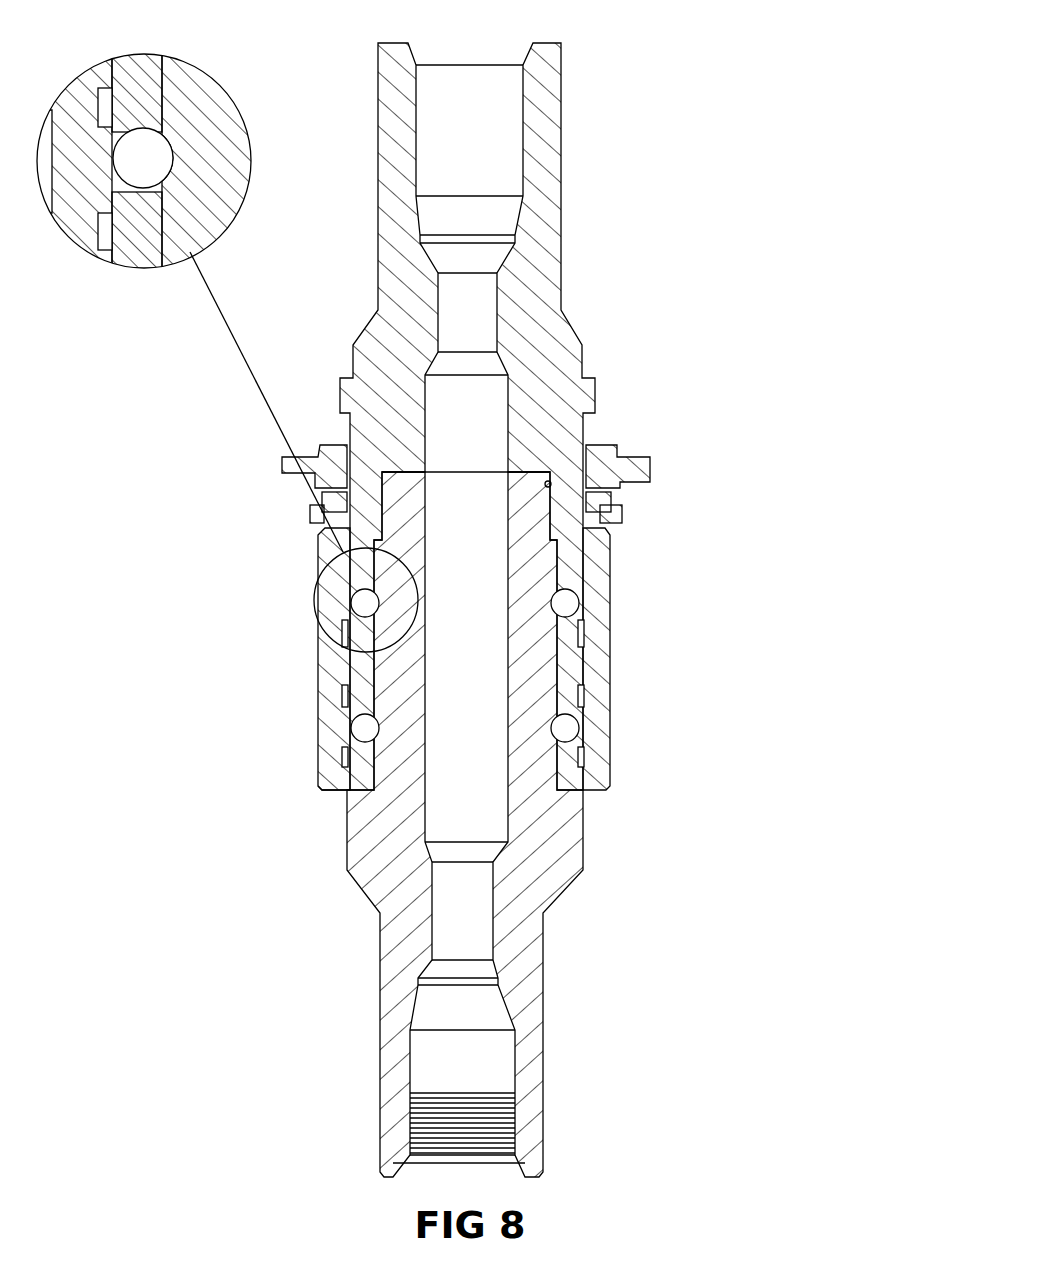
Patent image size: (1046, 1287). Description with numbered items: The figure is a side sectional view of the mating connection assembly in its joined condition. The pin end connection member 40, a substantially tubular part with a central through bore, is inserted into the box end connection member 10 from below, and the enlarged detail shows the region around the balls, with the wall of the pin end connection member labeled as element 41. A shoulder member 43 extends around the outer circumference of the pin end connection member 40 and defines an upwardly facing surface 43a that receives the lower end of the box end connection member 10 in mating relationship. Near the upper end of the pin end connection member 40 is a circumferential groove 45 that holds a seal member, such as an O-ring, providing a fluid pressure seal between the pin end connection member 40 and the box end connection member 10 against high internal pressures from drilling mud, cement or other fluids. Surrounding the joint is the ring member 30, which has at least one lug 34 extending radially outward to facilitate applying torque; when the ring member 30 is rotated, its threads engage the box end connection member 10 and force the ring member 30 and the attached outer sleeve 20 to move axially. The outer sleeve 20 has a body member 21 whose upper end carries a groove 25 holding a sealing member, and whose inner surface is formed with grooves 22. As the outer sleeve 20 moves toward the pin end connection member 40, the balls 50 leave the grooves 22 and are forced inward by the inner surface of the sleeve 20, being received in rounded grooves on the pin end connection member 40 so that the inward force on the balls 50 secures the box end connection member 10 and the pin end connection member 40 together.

The box end connection member 10 is at (572, 93).
The outer sleeve member 20 is at (365, 415).
The body member 21 is at (600, 636).
The groove 22 is at (102, 108).
The groove 25 is at (602, 508).
The ring member 30 is at (511, 455).
The lug 34 is at (652, 458).
The pin end connection member 40 is at (598, 856).
The mandrel wall 41 is at (215, 105).
The shoulder member 43 is at (172, 184).
The upwardly facing surface 43a is at (332, 773).
The circumferential groove 45 is at (549, 483).
The ball 50 is at (150, 155).